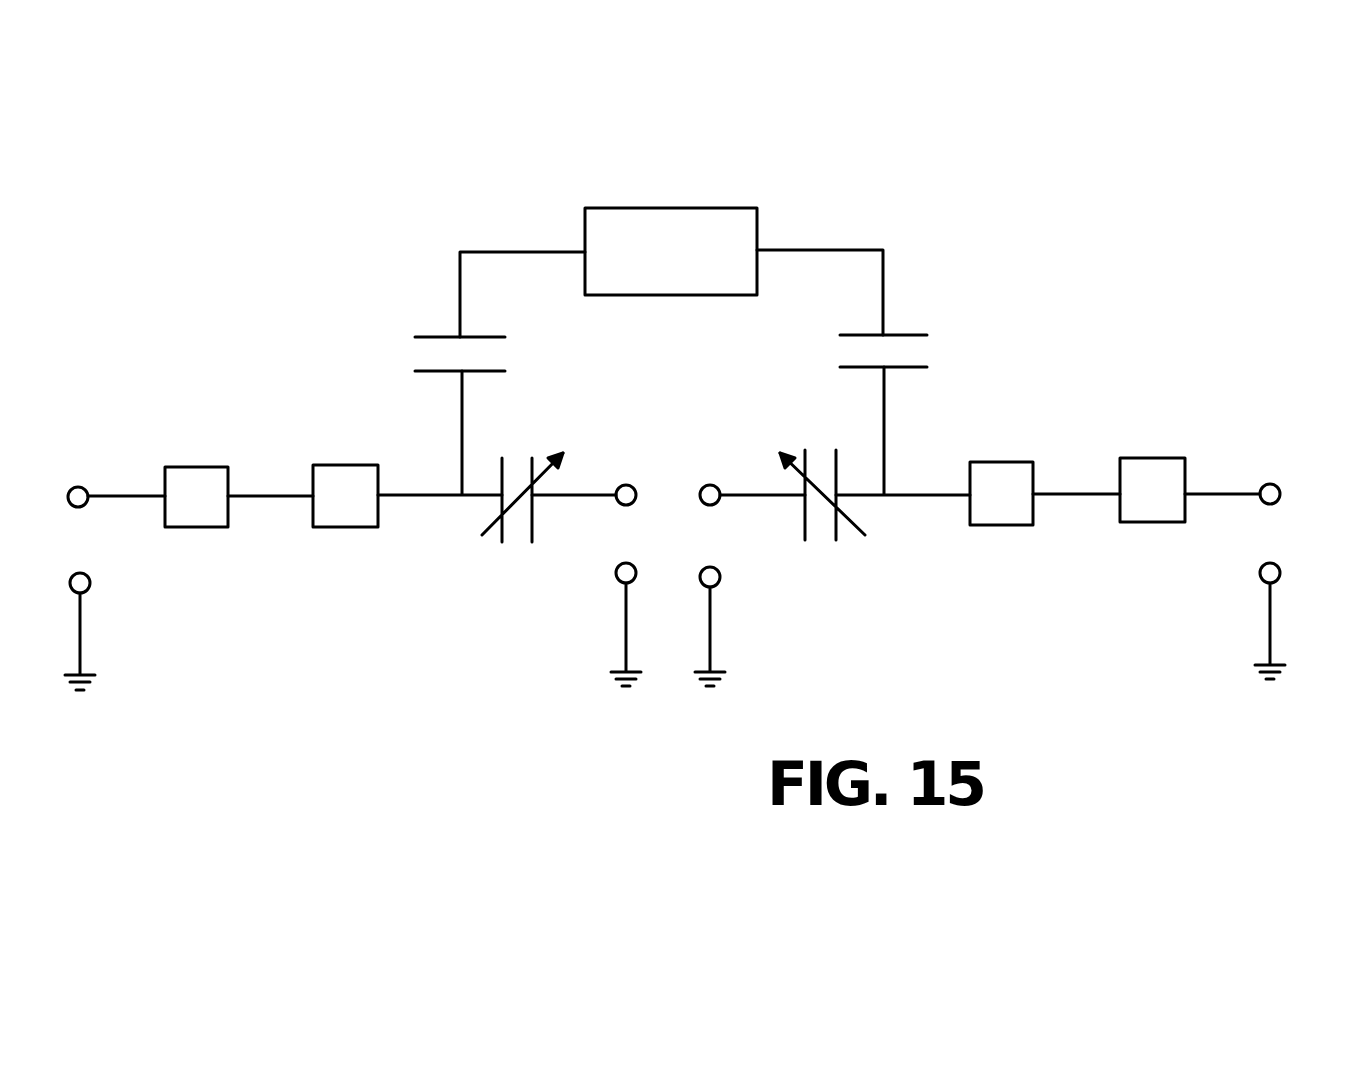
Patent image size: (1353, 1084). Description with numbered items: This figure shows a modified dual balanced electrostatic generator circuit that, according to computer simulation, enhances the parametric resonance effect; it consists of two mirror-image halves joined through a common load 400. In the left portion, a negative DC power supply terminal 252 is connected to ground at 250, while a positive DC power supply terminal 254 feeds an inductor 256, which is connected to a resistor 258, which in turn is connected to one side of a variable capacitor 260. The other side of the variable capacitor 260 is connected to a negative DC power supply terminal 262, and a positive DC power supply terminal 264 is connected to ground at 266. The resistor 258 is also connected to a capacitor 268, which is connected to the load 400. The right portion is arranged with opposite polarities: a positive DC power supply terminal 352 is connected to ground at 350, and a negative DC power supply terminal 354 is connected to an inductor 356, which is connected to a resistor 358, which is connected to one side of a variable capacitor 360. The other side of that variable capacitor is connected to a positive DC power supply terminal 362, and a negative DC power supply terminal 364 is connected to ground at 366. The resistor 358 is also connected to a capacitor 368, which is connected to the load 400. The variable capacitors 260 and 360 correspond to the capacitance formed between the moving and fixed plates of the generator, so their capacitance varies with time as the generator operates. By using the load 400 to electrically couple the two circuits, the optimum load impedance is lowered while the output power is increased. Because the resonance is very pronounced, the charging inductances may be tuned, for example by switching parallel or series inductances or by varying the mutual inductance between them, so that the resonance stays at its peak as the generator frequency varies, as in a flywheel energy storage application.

The ground 250 is at (85, 668).
The negative DC power supply terminal 252 is at (92, 581).
The positive DC power supply terminal 254 is at (70, 488).
The inductor 256 is at (203, 467).
The resistor 258 is at (353, 528).
The variable capacitor 260 is at (500, 533).
The negative DC power supply terminal 262 is at (633, 486).
The positive DC power supply terminal 264 is at (617, 578).
The ground 266 is at (614, 670).
The capacitor 268 is at (428, 337).
The load 400 is at (713, 269).
The capacitor 368 is at (900, 335).
The positive DC power supply terminal 362 is at (703, 487).
The variable capacitor 360 is at (840, 507).
The negative DC power supply terminal 364 is at (720, 578).
The ground 366 is at (720, 665).
The resistor 358 is at (1010, 525).
The inductor 356 is at (1153, 458).
The negative DC power supply terminal 354 is at (1280, 487).
The positive DC power supply terminal 352 is at (1262, 583).
The ground 350 is at (1267, 662).